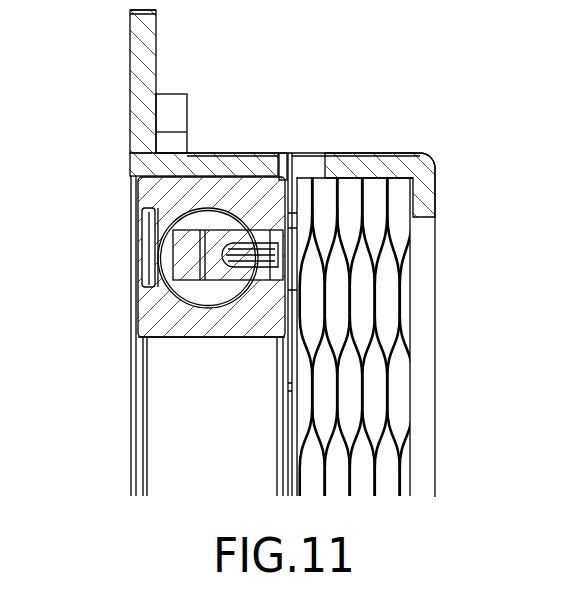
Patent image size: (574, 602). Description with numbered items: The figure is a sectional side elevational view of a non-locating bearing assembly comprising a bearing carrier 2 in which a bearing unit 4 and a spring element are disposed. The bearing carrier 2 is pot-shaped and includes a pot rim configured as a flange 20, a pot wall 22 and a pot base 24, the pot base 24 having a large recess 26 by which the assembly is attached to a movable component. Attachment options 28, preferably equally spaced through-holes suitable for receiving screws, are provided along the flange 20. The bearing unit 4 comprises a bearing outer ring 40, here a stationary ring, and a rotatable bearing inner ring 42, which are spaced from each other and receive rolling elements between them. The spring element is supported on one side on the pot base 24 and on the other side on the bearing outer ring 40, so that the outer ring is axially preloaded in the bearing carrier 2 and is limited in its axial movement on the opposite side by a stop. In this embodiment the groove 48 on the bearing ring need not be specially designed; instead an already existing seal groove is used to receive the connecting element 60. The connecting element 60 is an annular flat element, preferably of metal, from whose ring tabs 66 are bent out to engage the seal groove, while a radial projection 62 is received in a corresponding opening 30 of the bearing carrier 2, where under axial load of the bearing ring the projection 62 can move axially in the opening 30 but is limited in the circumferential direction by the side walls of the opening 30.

The bearing carrier 2 is at (120, 35).
The bearing unit 4 is at (173, 356).
The flange 20 is at (146, 56).
The pot wall 22 is at (225, 165).
The pot base 24 is at (423, 198).
The recess 26 is at (447, 305).
The attachment options 28 is at (180, 112).
The opening 30 is at (306, 162).
The bearing outer ring 40 is at (158, 188).
The bearing inner ring 42 is at (215, 336).
The groove 48 is at (290, 218).
The connecting element 60 is at (289, 182).
The projection 62 is at (281, 168).
The tabs 66 is at (286, 222).